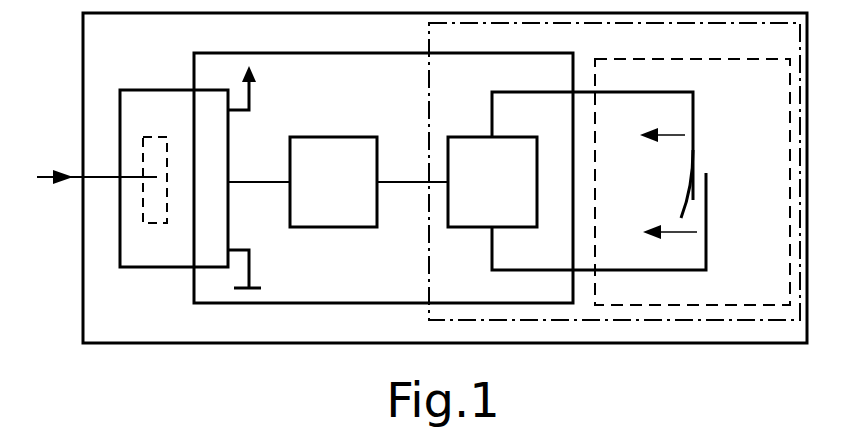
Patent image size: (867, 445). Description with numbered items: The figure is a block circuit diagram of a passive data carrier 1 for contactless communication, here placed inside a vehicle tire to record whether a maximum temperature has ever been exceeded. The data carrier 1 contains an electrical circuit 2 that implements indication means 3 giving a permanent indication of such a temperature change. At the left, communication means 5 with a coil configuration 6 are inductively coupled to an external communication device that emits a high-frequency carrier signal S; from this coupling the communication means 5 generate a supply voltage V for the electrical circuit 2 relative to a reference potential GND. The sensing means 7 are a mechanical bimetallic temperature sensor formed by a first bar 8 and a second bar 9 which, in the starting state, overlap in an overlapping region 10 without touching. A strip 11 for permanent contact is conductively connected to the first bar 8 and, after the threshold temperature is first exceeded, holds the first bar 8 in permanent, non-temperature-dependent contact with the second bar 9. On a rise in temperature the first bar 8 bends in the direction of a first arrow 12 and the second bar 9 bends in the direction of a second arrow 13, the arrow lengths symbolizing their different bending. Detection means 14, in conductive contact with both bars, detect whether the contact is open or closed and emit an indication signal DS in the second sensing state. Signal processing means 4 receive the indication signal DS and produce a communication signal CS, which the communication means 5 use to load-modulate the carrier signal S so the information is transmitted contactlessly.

The passive data carrier 1 is at (253, 346).
The electrical circuit 2 is at (190, 289).
The indication means 3 is at (422, 272).
The signal processing means 4 is at (355, 165).
The communication means 5 is at (172, 89).
The coil configuration 6 is at (147, 136).
The sensing means 7 is at (643, 50).
The first bar 8 is at (694, 136).
The second bar 9 is at (707, 211).
The overlapping region 10 is at (722, 180).
The strip for permanent contact 11 is at (688, 215).
The first arrow 12 is at (677, 135).
The second arrow 13 is at (679, 233).
The detection means 14 is at (475, 167).
The high-frequency carrier signal S is at (37, 177).
The supply voltage V is at (262, 98).
The reference potential GND is at (262, 288).
The communication signal CS is at (270, 180).
The indication signal DS is at (410, 180).